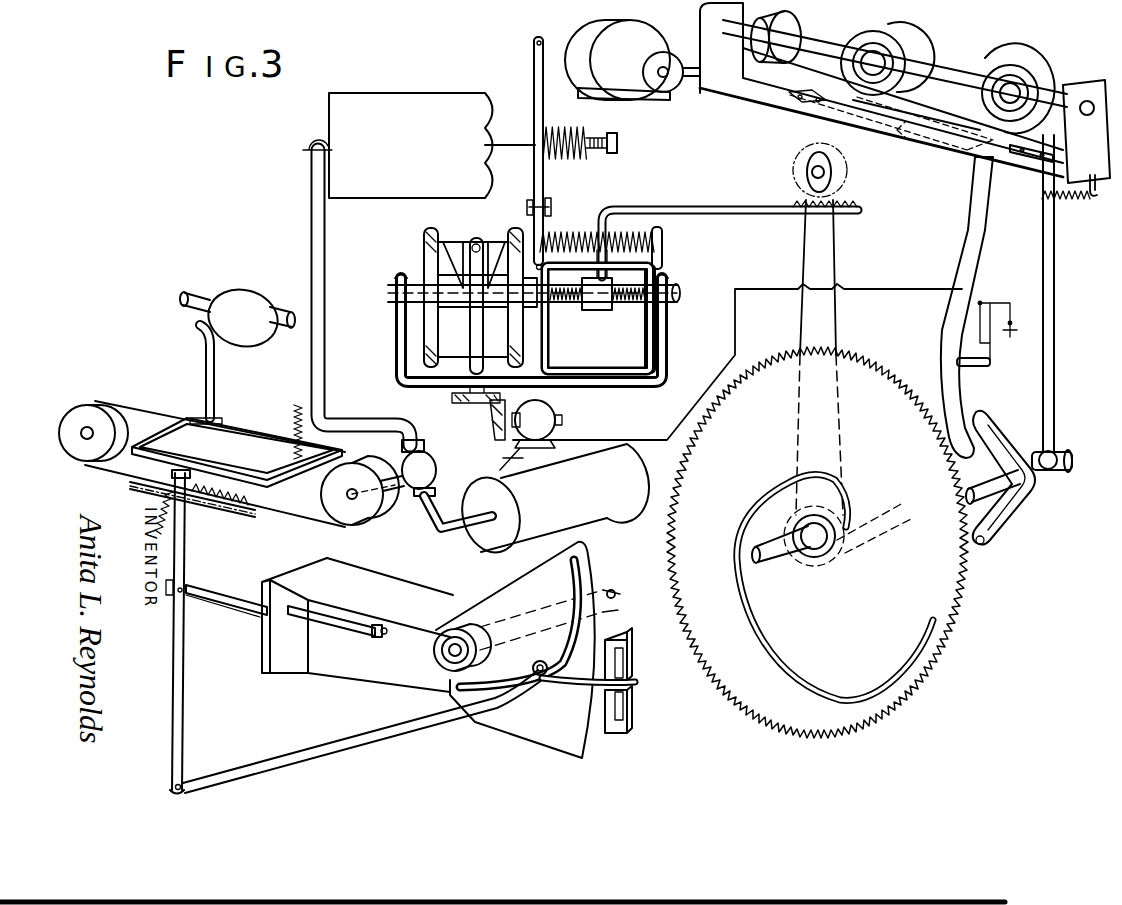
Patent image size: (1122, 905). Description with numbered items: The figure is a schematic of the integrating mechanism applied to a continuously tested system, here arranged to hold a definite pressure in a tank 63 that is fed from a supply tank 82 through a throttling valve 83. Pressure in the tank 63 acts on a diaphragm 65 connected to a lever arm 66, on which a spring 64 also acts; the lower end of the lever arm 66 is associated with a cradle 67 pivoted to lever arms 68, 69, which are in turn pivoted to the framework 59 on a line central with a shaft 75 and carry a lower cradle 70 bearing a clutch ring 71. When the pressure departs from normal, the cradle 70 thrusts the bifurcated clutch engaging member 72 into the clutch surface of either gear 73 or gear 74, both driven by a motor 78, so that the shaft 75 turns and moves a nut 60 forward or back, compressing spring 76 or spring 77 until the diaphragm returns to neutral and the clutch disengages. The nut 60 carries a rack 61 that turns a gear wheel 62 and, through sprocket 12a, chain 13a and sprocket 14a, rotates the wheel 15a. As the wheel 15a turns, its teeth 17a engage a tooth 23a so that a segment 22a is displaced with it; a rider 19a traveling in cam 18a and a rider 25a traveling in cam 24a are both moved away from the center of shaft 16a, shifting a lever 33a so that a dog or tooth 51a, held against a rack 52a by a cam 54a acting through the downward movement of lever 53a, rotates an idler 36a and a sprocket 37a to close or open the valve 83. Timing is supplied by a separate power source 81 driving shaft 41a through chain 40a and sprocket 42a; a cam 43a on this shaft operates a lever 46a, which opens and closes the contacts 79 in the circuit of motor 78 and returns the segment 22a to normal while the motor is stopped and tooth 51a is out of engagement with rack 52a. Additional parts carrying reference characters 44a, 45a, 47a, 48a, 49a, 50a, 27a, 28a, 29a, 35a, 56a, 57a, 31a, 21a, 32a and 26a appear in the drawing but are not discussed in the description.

The power source 81 is at (578, 28).
The chain 40a is at (678, 36).
The shaft 41a is at (818, 36).
The sprocket 42a is at (784, 20).
The cam 43a is at (908, 32).
The roller 44a is at (1053, 46).
The mounting plate 47a is at (806, 101).
The plate 45a is at (884, 143).
The gear wheel 62 is at (793, 174).
The sprocket 12a is at (833, 173).
The rack 61 is at (705, 211).
The spring 76 is at (597, 216).
The spring 77 is at (650, 240).
The cradle 67 is at (664, 256).
The shaft 75 is at (656, 292).
The tank 63 is at (392, 94).
The lever arm 66 is at (530, 178).
The diaphragm 65 is at (490, 130).
The gear 74 is at (527, 228).
The spring 64 is at (556, 160).
The framework 59 is at (395, 356).
The cradle 70 is at (593, 352).
The gear 73 is at (421, 242).
The clutch engaging member 72 is at (462, 222).
The clutch ring 71 is at (472, 314).
The nut 60 is at (597, 312).
The lever arm 68 is at (549, 305).
The lever arm 69 is at (634, 300).
The motor 78 is at (548, 405).
The chain 13a is at (831, 325).
The wheel 15a is at (875, 359).
The cam 18a is at (750, 609).
The sprocket 14a is at (842, 558).
The teeth 17a is at (968, 560).
The lever 46a is at (970, 182).
The rod 48a is at (1040, 237).
The pin 50a is at (1064, 440).
The contacts 79 is at (988, 368).
The cam 28a is at (973, 414).
The cam shaft 27a is at (1025, 507).
The cam end 29a is at (985, 540).
The spring 49a is at (1073, 210).
The idler 36a is at (72, 462).
The belt 35a is at (128, 392).
The sprocket 37a is at (352, 530).
The throttling valve 83 is at (434, 458).
The supply tank 82 is at (637, 470).
The lever 53a is at (232, 450).
The cam 54a is at (262, 290).
The spring 57a is at (296, 425).
The rack 52a is at (237, 514).
The dog 51a is at (222, 488).
The spring 56a is at (184, 518).
The lever 33a is at (187, 570).
The rod 31a is at (231, 604).
The rider 19a is at (380, 630).
The roller 21a is at (410, 637).
The shaft 16a is at (613, 590).
The segment 22a is at (527, 737).
The cam 24a is at (567, 644).
The rod 32a is at (383, 748).
The rider 25a is at (543, 679).
The tooth 23a is at (638, 680).
The slider lower 26a is at (627, 735).